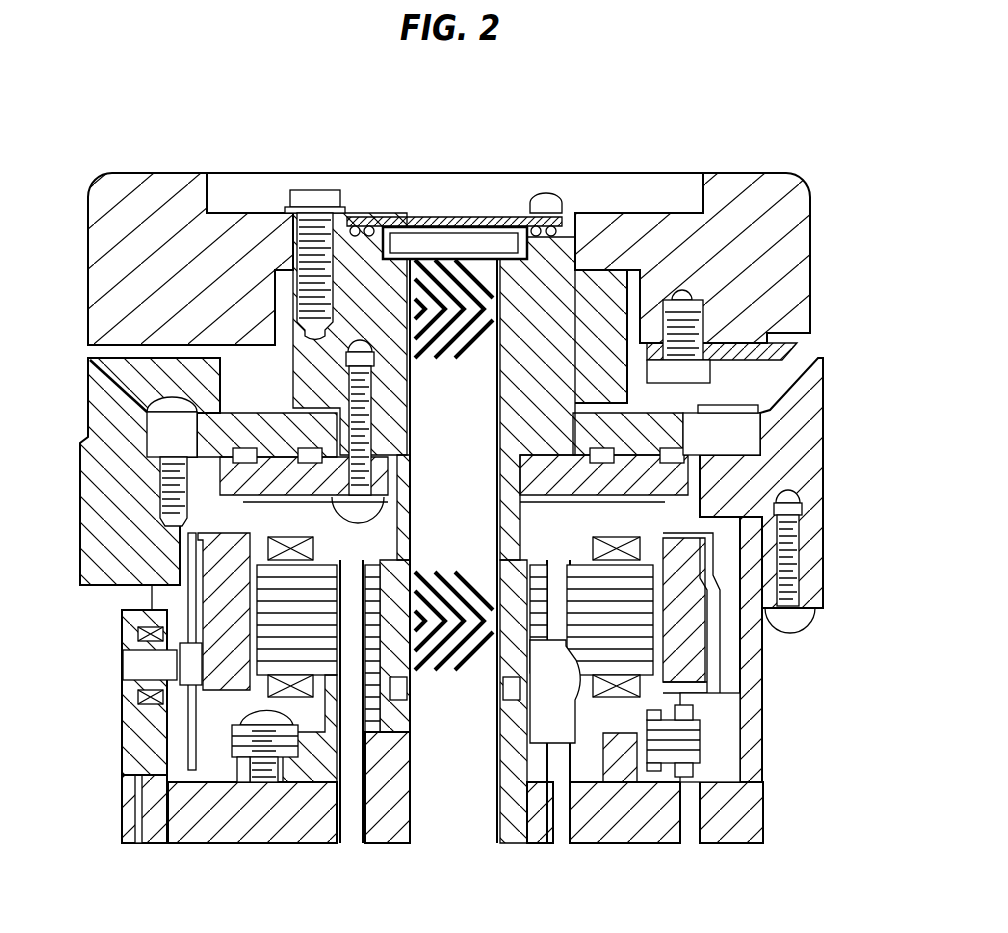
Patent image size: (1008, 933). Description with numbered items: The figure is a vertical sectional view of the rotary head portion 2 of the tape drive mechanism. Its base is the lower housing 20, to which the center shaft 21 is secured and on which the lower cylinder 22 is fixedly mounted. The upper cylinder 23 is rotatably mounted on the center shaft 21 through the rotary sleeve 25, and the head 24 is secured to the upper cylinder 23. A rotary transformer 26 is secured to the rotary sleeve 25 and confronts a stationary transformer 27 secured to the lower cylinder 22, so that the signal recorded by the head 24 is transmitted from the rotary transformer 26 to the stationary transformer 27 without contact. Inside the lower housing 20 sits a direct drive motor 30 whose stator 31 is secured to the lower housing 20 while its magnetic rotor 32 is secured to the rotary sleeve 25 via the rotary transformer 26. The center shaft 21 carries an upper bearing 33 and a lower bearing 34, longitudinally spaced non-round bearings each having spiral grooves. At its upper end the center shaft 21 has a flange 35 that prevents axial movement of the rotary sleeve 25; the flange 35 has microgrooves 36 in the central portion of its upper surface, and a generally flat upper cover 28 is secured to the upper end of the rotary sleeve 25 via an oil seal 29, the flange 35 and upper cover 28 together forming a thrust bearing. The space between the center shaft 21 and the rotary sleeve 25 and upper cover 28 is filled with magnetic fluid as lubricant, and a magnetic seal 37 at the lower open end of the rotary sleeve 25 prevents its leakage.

The rotary head portion 2 is at (451, 485).
The lower housing 20 is at (748, 693).
The center shaft 21 is at (485, 825).
The lower cylinder 22 is at (808, 413).
The upper cylinder 23 is at (785, 250).
The head 24 is at (772, 345).
The rotary sleeve 25 is at (607, 297).
The rotary transformer 26 is at (215, 478).
The stationary transformer 27 is at (697, 430).
The upper cover 28 is at (560, 205).
The oil seal 29 is at (356, 228).
The direct drive motor 30 is at (232, 710).
The stator 31 is at (633, 655).
The stator 32 is at (693, 628).
The upper bearing 33 is at (487, 300).
The lower bearing 34 is at (445, 673).
The flange 35 is at (418, 240).
The microgrooves 36 is at (461, 218).
The magnetic seal 37 is at (510, 710).